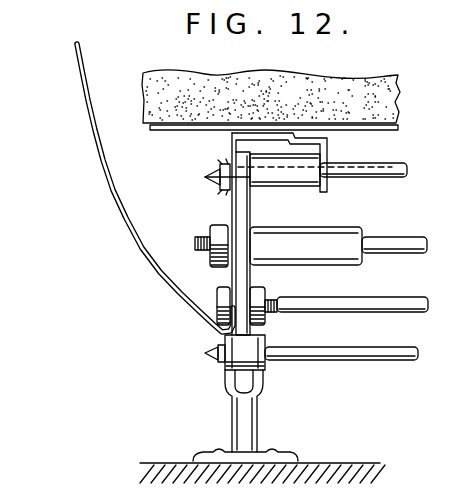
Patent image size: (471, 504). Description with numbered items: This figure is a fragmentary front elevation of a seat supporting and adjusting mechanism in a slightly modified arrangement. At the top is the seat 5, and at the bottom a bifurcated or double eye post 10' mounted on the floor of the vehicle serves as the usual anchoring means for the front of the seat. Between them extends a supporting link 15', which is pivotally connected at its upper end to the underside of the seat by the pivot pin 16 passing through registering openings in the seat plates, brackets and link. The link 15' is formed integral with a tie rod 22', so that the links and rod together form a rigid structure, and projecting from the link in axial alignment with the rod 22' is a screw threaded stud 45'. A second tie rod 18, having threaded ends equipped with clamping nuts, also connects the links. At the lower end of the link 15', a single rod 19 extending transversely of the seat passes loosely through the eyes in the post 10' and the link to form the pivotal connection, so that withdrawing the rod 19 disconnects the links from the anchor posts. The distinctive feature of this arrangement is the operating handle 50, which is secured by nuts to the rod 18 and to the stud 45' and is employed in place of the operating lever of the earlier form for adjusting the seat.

The seat 5 is at (350, 85).
The operating handle 50 is at (98, 141).
The supporting link 15' is at (279, 234).
The pivot pin 16 is at (381, 172).
The tie rod 22' is at (338, 236).
The screw threaded stud 45' is at (196, 238).
The tie rod 18 is at (358, 306).
The rod 19 is at (371, 362).
The double eye post 10' is at (262, 426).